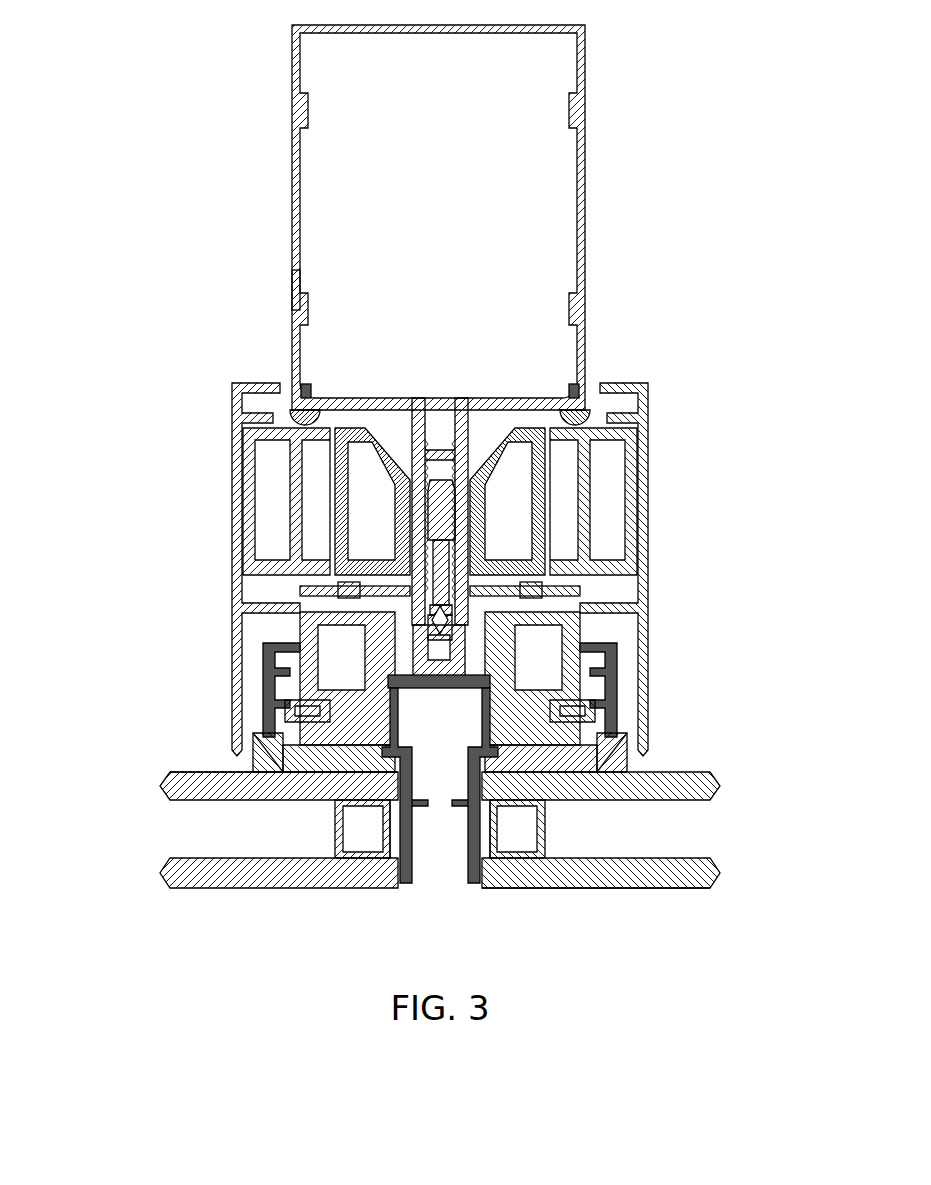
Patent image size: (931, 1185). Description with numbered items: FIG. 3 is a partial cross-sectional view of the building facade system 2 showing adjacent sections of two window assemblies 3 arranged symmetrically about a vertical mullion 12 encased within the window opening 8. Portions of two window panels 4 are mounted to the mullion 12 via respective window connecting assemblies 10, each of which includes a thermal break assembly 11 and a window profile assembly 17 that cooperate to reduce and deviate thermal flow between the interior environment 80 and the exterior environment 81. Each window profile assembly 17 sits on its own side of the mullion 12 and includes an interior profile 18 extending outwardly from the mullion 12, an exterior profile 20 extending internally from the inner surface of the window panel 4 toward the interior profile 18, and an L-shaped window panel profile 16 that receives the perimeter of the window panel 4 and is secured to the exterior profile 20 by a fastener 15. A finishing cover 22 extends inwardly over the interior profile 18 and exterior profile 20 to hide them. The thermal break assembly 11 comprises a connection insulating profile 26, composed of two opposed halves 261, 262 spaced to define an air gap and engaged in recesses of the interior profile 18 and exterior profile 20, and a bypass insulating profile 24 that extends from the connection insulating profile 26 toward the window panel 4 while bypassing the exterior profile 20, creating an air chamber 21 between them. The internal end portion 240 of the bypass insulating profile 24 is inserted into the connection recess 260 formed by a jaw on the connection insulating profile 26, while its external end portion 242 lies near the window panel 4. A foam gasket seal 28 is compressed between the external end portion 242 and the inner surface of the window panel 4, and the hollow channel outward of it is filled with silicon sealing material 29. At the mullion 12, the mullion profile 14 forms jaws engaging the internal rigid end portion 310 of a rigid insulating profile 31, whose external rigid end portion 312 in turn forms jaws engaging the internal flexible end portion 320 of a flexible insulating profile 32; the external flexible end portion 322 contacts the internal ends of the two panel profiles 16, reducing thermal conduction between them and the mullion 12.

The building facade system 2 is at (443, 822).
The window assembly 3 is at (137, 370).
The window panel 4 is at (141, 823).
The window opening 8 is at (250, 208).
The window connecting assembly 10 is at (145, 492).
The thermal break assembly 11 is at (185, 603).
The mullion 12 is at (280, 298).
The mullion profile 14 is at (458, 468).
The fastener 15 is at (490, 739).
The window panel profile 16 is at (397, 677).
The window profile assembly 17 is at (185, 590).
The interior profile 18 is at (250, 493).
The exterior profile 20 is at (323, 707).
The air chamber 21 is at (285, 712).
The finishing cover 22 is at (241, 435).
The bypass insulating profile 24 is at (270, 687).
The connection insulating profile 26 is at (306, 638).
The gasket seal 28 is at (610, 757).
The sealing material 29 is at (558, 763).
The rigid insulating profile 31 is at (566, 547).
The flexible insulating profile 32 is at (565, 614).
The interior environment 80 is at (178, 765).
The exterior environment 81 is at (426, 913).
The internal end portion 240 is at (580, 651).
The external end portion 242 is at (600, 738).
The connection recess 260 is at (580, 672).
The first halve 261 is at (540, 634).
The second halve 262 is at (557, 698).
The internal rigid end portion 310 is at (440, 505).
The external rigid end portion 312 is at (457, 605).
The internal flexible end portion 320 is at (448, 617).
The external flexible end portion 322 is at (460, 680).